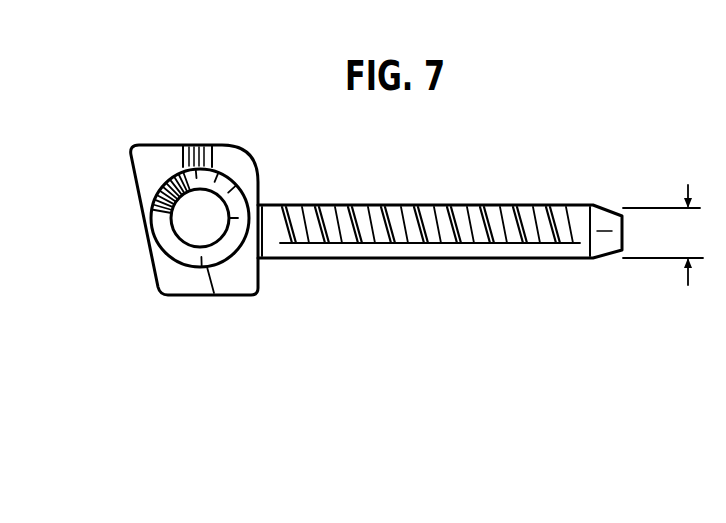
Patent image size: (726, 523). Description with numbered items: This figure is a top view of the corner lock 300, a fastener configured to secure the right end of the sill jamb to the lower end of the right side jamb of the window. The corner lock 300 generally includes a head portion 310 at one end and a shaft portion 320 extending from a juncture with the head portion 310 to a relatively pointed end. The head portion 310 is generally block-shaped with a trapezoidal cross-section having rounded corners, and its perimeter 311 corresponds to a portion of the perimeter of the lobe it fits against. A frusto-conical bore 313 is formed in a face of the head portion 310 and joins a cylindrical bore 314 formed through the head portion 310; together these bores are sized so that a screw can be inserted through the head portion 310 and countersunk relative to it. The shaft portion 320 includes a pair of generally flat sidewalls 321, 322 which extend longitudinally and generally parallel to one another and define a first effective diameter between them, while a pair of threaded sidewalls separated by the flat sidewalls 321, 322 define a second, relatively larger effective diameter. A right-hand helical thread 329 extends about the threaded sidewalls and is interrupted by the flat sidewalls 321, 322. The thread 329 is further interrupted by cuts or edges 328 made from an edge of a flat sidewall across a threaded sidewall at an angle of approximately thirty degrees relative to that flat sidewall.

The corner lock 300 is at (380, 204).
The head portion 310 is at (178, 204).
The perimeter 311 is at (243, 157).
The frusto-conical bore 313 is at (186, 152).
The cylindrical bore 314 is at (190, 230).
The shaft portion 320 is at (612, 207).
The flat sidewall 321 is at (469, 227).
The flat sidewall 322 is at (430, 196).
The cut or edge 328 is at (470, 208).
The helical thread 329 is at (545, 207).